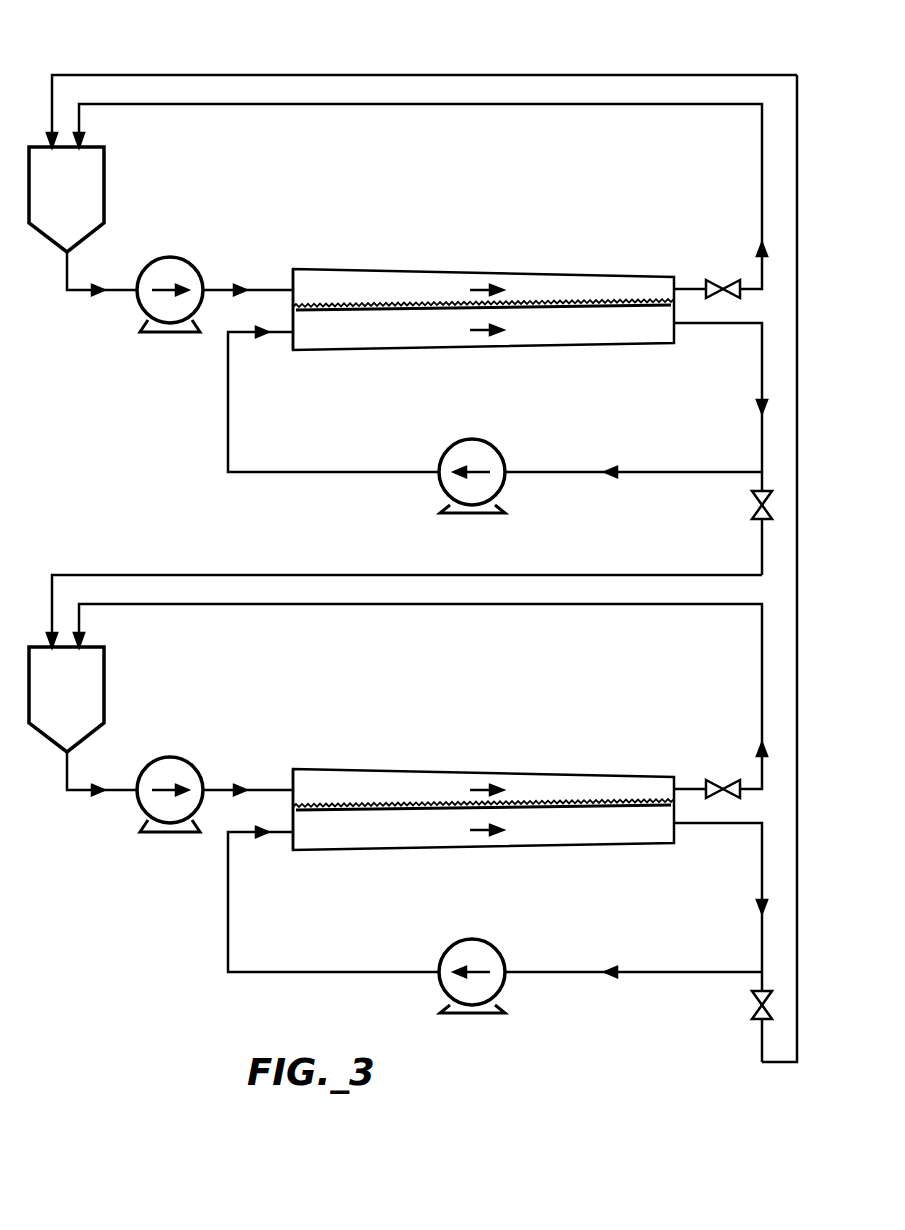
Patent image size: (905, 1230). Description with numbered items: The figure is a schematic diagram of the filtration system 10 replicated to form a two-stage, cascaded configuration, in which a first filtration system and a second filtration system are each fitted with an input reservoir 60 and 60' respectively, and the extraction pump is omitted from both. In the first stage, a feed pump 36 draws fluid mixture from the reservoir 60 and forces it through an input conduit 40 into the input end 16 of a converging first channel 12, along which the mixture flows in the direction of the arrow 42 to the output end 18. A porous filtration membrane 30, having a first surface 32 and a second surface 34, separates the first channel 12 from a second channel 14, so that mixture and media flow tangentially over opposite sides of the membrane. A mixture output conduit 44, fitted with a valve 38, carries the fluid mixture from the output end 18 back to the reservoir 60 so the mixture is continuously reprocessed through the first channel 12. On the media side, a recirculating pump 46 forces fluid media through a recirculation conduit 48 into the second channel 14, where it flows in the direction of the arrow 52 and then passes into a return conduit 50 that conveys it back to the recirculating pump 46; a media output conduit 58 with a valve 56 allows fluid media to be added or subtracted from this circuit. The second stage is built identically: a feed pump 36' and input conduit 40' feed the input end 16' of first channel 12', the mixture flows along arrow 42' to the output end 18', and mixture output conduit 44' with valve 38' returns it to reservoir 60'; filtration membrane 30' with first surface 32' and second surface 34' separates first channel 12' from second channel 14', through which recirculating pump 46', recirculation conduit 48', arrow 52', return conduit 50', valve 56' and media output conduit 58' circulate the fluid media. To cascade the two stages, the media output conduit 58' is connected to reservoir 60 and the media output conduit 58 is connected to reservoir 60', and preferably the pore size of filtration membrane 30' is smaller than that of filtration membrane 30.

The filtration system 10 is at (110, 42).
The first channel 12 is at (483, 294).
The second channel 14 is at (483, 341).
The input end 16 is at (320, 296).
The output end 18 is at (667, 266).
The filtration membrane 30 is at (483, 344).
The first surface 32 is at (425, 261).
The second surface 34 is at (410, 346).
The feed pump 36 is at (175, 275).
The valve 38 is at (711, 269).
The input conduit 40 is at (248, 274).
The arrow 42 is at (494, 270).
The mixture output conduit 44 is at (420, 196).
The recirculating pump 46 is at (600, 478).
The recirculation conduit 48 is at (333, 420).
The return conduit 50 is at (720, 397).
The arrow 52 is at (496, 353).
The valve 56 is at (737, 504).
The media output conduit 58 is at (732, 547).
The input reservoir 60 is at (94, 199).
The input reservoir 60' is at (97, 699).
The feed pump 36' is at (178, 775).
The input conduit 40' is at (248, 774).
The first channel 12' is at (483, 794).
The second channel 14' is at (483, 841).
The input end 16' is at (323, 796).
The output end 18' is at (667, 766).
The filtration membrane 30' is at (483, 844).
The first surface 32' is at (428, 761).
The second surface 34' is at (413, 846).
The valve 38' is at (711, 769).
The arrow 42' is at (497, 770).
The mixture output conduit 44' is at (420, 696).
The recirculating pump 46' is at (600, 978).
The recirculation conduit 48' is at (333, 920).
The return conduit 50' is at (720, 897).
The arrow 52' is at (499, 853).
The valve 56' is at (737, 1004).
The media output conduit 58' is at (732, 1043).